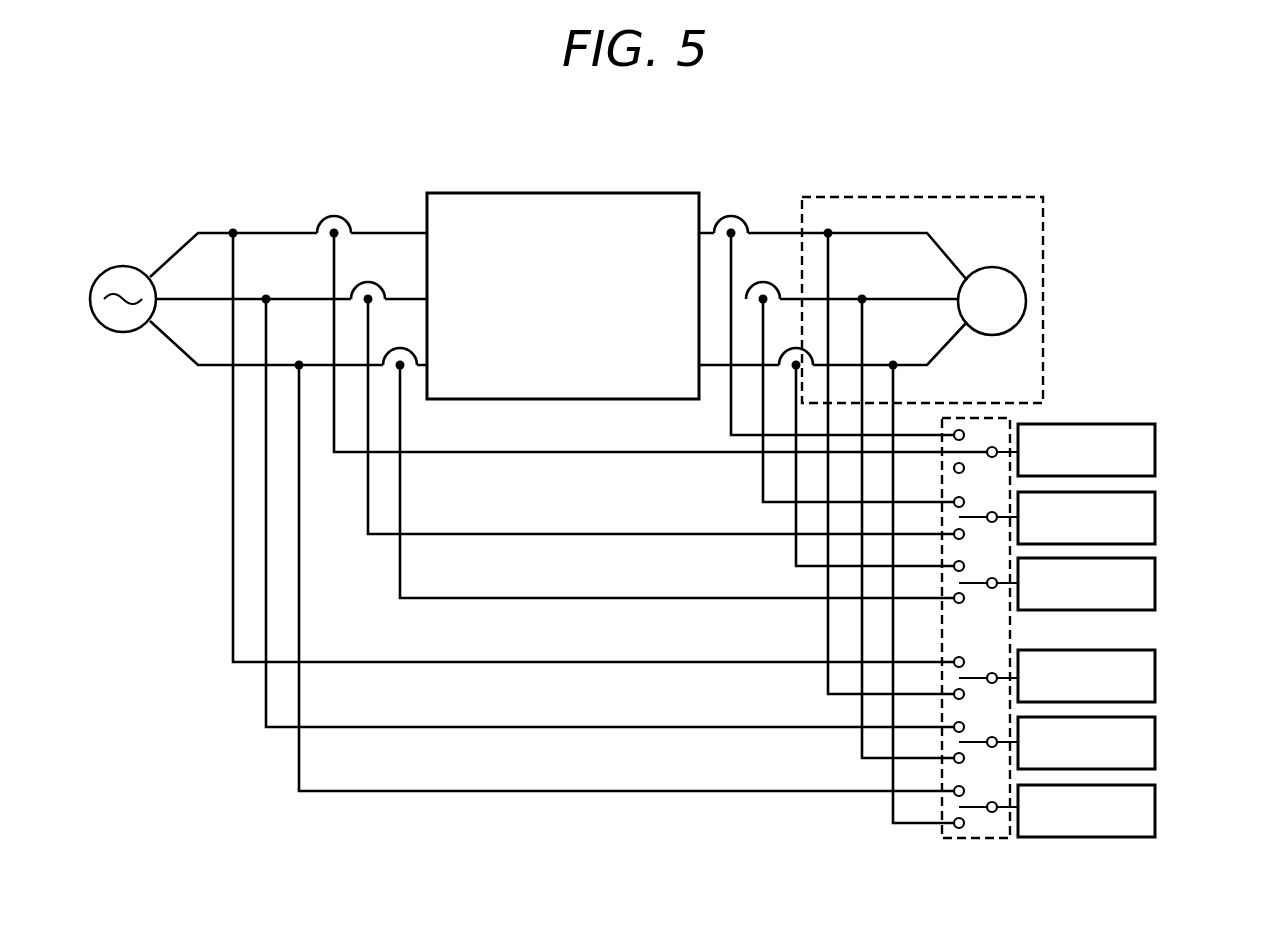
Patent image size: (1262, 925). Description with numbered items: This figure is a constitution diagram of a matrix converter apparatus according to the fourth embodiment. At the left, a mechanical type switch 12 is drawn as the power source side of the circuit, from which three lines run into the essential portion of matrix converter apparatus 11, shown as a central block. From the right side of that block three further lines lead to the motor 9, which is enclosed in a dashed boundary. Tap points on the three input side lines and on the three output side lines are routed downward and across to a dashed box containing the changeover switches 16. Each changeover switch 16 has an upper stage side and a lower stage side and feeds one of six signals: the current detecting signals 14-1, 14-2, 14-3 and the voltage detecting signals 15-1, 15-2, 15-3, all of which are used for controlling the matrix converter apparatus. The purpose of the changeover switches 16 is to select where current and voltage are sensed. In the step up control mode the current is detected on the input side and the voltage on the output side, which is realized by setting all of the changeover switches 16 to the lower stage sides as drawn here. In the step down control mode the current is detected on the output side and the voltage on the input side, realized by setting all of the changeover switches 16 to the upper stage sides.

The mechanical type switch 12 is at (112, 332).
The essential portion of matrix converter apparatus 11 is at (563, 192).
The motor 9 is at (1026, 300).
The changeover switch 16 is at (975, 840).
The current detecting signal 1 14-1 is at (1155, 452).
The current detecting signal 2 14-2 is at (1155, 517).
The current detecting signal 3 14-3 is at (1155, 583).
The voltage detecting signal 1 15-1 is at (1155, 678).
The voltage detecting signal 2 15-2 is at (1155, 742).
The voltage detecting signal 3 15-3 is at (1155, 807).